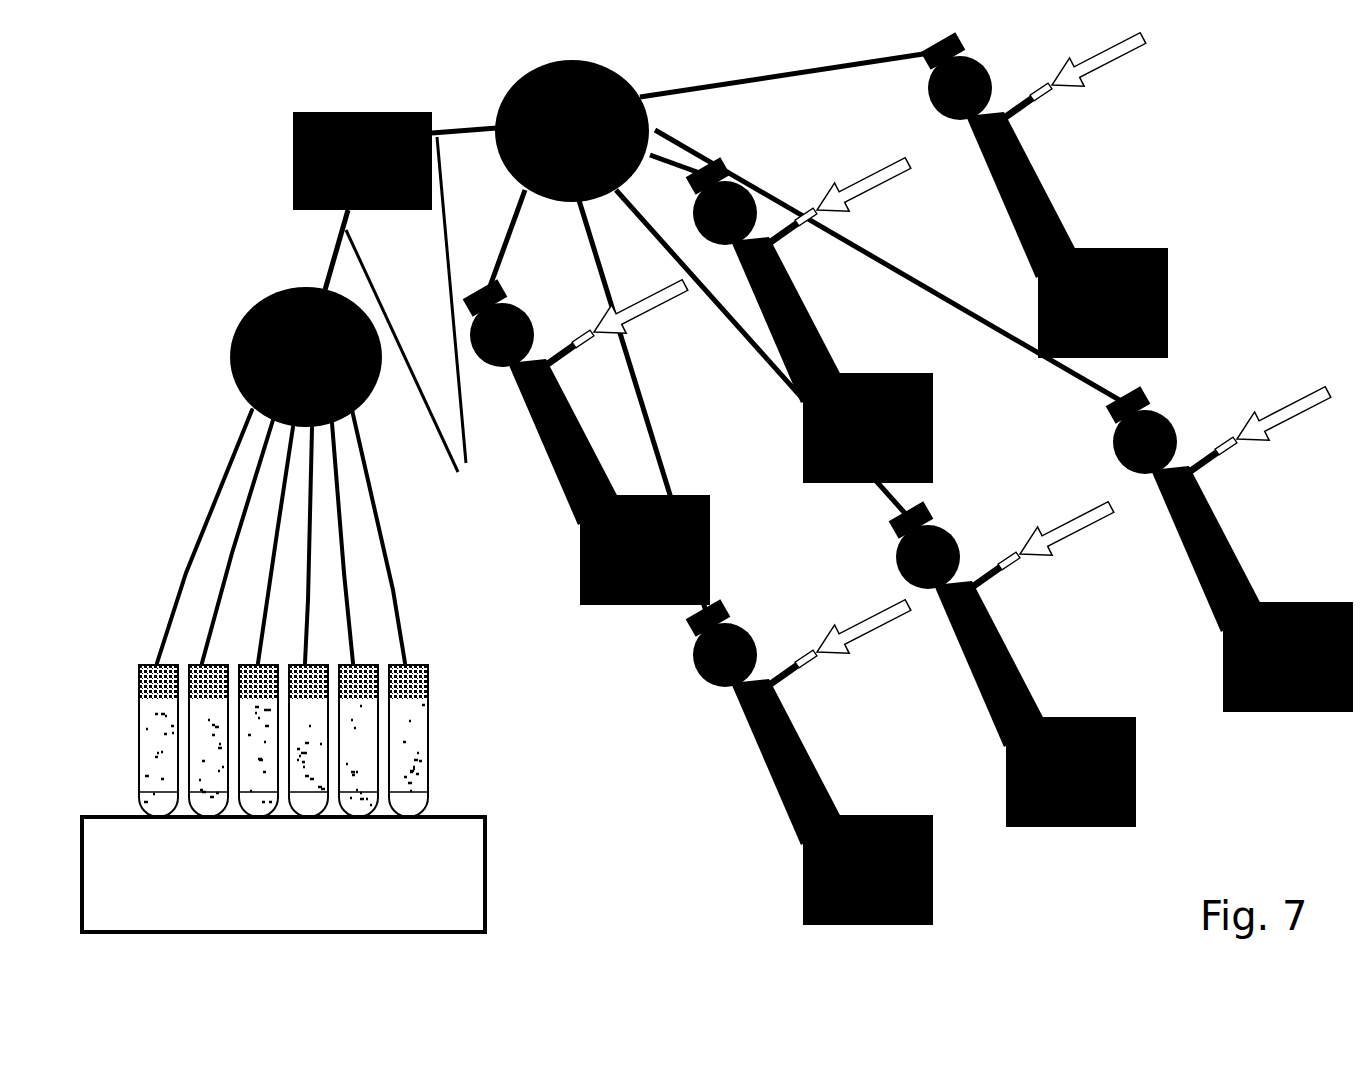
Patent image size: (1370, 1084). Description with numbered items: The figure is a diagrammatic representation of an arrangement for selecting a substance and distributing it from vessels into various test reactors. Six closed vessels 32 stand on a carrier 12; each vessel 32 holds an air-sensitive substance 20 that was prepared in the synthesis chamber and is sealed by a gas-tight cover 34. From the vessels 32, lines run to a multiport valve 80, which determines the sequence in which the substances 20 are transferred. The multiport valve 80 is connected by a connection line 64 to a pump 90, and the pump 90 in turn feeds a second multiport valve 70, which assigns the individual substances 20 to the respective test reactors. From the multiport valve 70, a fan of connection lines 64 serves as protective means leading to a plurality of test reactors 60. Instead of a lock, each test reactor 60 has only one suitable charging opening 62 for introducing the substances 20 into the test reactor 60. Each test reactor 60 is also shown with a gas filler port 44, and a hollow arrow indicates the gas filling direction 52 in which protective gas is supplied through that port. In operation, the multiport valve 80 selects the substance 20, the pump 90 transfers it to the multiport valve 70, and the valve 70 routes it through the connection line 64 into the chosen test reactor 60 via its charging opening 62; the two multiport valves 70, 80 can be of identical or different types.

The carrier 12 is at (457, 873).
The substance 20 is at (410, 773).
The vessel 32 is at (428, 728).
The gas-tight cover 34 is at (428, 682).
The gas filler port 44 is at (1035, 103).
The gas filling direction 52 is at (1112, 60).
The test reactor 60 is at (1315, 603).
The charging opening 62 is at (1170, 413).
The connection line 64 is at (632, 390).
The multiport valve 70 is at (509, 93).
The multiport valve 80 is at (230, 357).
The pump 90 is at (293, 162).